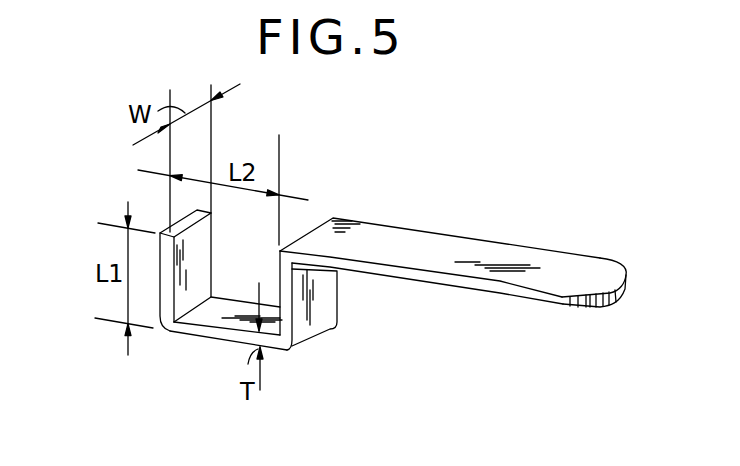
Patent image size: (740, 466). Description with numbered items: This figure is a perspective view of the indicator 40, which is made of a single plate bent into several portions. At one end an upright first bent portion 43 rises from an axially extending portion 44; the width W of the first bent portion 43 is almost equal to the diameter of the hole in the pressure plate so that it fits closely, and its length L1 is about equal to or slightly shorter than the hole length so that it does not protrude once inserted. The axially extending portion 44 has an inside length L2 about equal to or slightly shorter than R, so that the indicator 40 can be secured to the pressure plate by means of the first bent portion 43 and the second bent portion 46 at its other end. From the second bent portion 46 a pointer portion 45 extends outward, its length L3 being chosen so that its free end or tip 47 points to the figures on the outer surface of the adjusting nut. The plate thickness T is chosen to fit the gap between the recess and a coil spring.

The indicator 40 is at (467, 223).
The first bent portion 43 is at (163, 277).
The axially extending portion 44 is at (212, 333).
The pointer portion 45 is at (485, 288).
The second bent portion 46 is at (288, 310).
The tip 47 is at (615, 295).